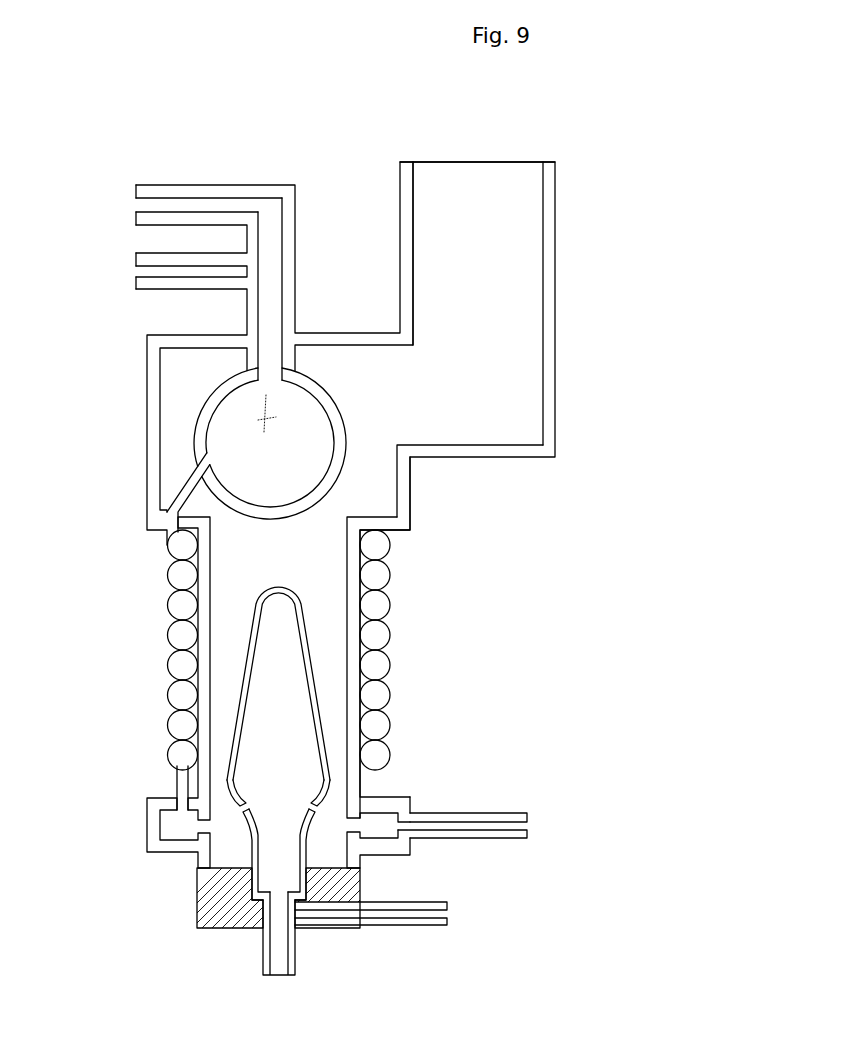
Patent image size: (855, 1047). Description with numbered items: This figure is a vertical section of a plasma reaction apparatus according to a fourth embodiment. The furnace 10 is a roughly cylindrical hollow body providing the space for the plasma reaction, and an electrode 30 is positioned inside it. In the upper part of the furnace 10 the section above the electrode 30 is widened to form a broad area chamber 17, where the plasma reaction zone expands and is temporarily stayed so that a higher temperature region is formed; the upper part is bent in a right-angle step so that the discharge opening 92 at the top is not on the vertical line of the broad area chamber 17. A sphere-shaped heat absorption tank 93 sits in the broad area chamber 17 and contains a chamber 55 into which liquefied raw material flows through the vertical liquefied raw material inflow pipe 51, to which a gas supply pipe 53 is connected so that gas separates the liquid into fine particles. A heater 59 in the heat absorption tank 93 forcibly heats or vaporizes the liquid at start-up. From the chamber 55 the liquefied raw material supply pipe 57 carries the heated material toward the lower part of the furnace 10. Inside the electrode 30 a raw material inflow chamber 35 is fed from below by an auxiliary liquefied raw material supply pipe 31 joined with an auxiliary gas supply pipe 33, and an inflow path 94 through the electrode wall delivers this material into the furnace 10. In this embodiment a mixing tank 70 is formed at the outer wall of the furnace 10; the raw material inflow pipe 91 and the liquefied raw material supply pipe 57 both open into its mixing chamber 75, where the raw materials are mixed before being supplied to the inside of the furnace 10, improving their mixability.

The furnace 10 is at (142, 552).
The broad area chamber 17 is at (387, 490).
The electrode 30 is at (286, 743).
The auxiliary liquefied raw material supply pipe 31 is at (263, 952).
The auxiliary gas supply pipe 33 is at (398, 920).
The raw material inflow chamber 35 is at (258, 730).
The liquefied raw material inflow pipe 51 is at (292, 212).
The gas supply pipe 53 is at (155, 284).
The chamber 55 is at (315, 410).
The liquefied raw material supply pipe 57 is at (195, 483).
The heater 59 is at (272, 425).
The mixing tank 70 is at (155, 850).
The mixing chamber 75 is at (168, 820).
The raw material inflow pipe 91 is at (497, 813).
The discharge opening 92 is at (476, 175).
The heat absorption tank 93 is at (212, 393).
The inflow path 94 is at (237, 808).